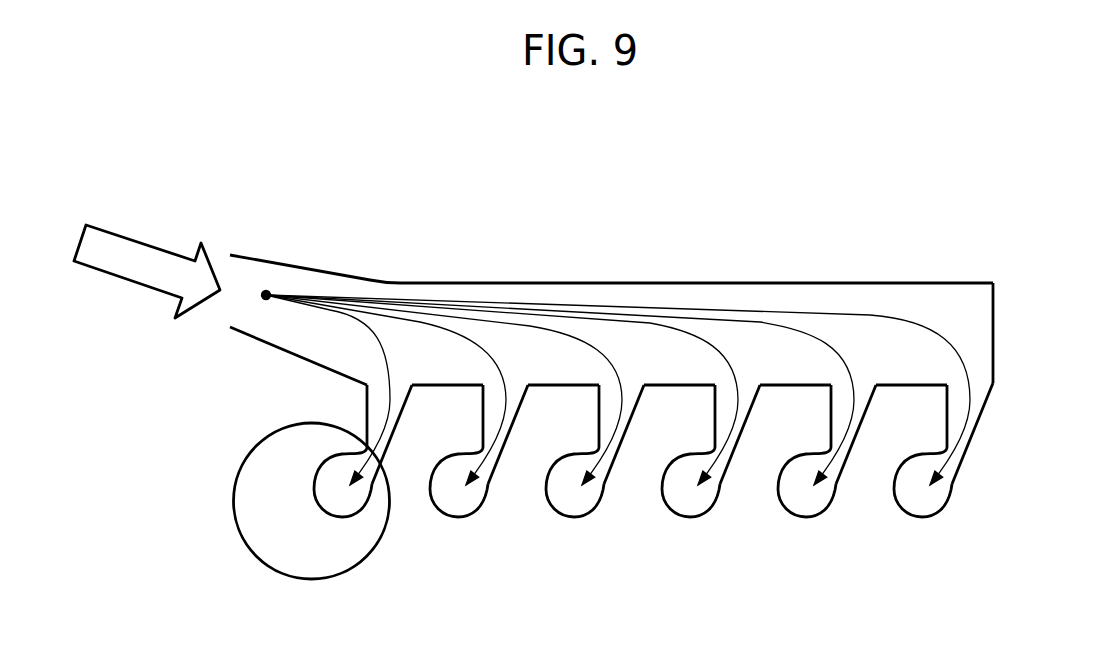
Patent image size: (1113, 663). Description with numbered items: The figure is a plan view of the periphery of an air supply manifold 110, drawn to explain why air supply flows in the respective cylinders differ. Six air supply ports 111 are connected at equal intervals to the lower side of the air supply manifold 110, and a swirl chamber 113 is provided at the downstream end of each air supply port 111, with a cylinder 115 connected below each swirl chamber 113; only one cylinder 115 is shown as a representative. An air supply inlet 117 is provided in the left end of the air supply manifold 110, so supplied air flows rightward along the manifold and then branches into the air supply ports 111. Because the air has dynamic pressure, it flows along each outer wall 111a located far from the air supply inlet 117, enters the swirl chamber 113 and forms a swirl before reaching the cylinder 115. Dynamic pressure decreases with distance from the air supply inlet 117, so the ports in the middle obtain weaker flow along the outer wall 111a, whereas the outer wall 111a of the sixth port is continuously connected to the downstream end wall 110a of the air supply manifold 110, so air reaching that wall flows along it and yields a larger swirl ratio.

The air supply manifold 110 is at (863, 282).
The downstream end wall 110a is at (995, 303).
The air supply port 111 is at (405, 400).
The outer wall 111a is at (392, 447).
The swirl chamber 113 is at (348, 510).
The cylinder 115 is at (234, 492).
The air supply inlet 117 is at (266, 291).